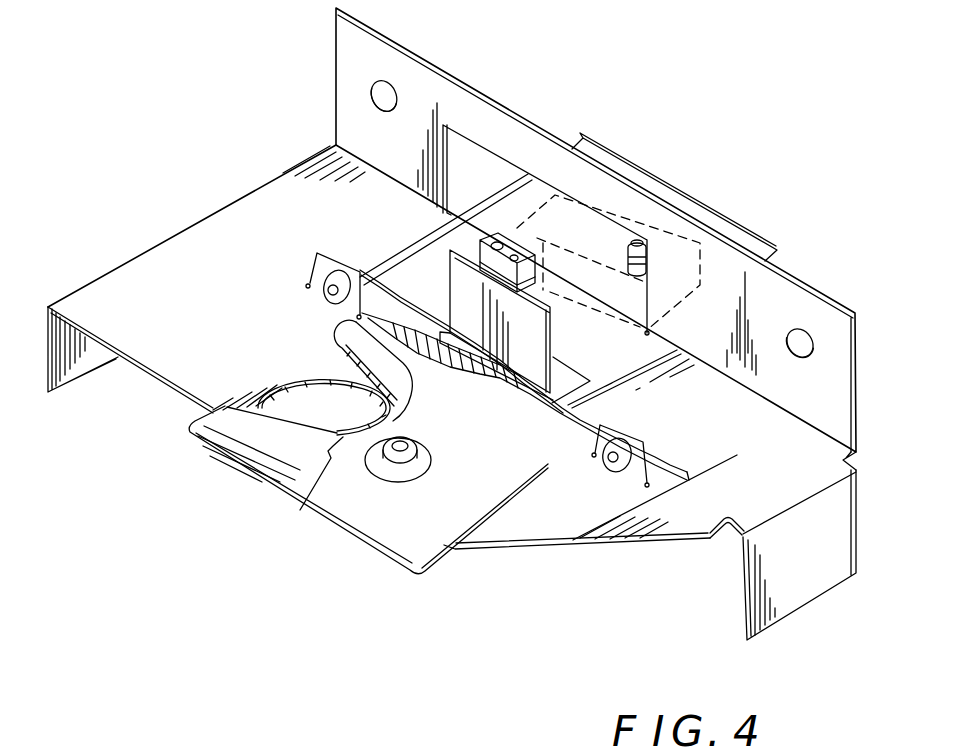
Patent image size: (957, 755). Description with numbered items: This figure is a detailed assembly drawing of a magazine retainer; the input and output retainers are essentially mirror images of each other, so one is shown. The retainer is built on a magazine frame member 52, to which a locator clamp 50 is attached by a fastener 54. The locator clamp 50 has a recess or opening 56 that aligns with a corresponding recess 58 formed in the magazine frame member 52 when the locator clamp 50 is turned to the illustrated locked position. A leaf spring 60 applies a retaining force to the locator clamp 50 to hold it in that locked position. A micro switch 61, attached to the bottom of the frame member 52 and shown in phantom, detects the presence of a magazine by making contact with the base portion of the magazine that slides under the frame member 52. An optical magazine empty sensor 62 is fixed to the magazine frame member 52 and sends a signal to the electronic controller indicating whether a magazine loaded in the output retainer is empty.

The locator clamp 50 is at (348, 455).
The magazine frame member 52 is at (645, 191).
The fastener 54 is at (390, 469).
The recess or opening 56 is at (306, 500).
The recess 58 is at (290, 383).
The leaf spring 60 is at (572, 430).
The micro switch 61 is at (700, 264).
The optical magazine empty sensor 62 is at (487, 239).